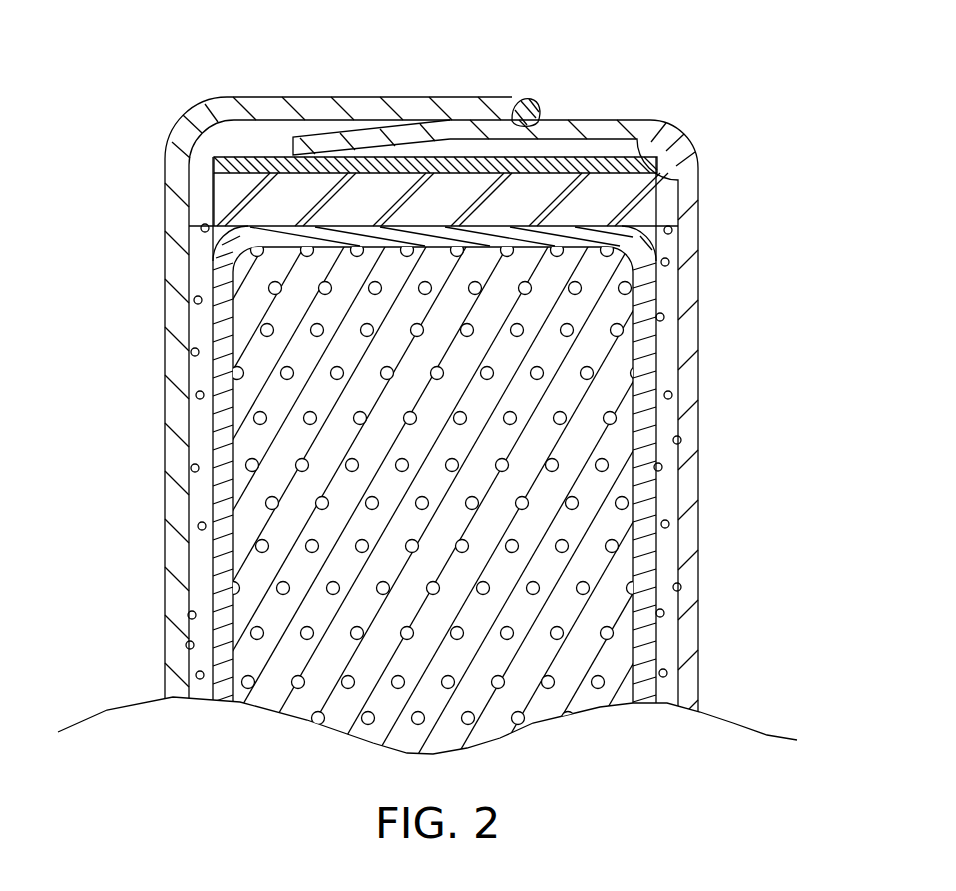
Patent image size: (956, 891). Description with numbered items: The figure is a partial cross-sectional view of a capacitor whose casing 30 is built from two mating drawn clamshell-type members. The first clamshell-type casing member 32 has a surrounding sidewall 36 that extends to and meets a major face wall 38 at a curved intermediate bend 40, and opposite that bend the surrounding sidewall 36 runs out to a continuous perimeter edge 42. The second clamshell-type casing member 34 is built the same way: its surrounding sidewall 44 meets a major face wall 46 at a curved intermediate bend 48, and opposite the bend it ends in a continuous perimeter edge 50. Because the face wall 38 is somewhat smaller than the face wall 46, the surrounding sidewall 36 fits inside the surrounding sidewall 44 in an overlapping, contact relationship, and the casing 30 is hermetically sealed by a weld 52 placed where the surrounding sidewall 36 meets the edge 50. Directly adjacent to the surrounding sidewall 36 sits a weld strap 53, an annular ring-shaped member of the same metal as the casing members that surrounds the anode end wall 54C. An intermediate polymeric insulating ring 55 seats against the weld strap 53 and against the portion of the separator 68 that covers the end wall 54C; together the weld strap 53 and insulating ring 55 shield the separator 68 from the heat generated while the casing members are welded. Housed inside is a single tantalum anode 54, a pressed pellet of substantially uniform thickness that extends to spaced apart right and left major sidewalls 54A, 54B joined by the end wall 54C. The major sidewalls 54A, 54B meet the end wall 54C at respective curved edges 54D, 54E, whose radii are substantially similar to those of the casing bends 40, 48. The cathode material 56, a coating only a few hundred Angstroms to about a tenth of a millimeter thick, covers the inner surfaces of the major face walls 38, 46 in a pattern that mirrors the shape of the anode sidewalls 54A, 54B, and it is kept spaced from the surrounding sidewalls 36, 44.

The casing 30 is at (767, 92).
The first clamshell-type casing member 32 is at (697, 202).
The second clamshell-type casing member 34 is at (240, 190).
The surrounding sidewall 36 is at (598, 126).
The major face wall 38 is at (697, 430).
The curved intermediate bend 40 is at (655, 132).
The perimeter edge 42 is at (293, 140).
The surrounding sidewall 44 is at (312, 105).
The major face wall 46 is at (167, 430).
The curved intermediate bend 48 is at (188, 130).
The perimeter edge 50 is at (522, 98).
The weld 52 is at (542, 120).
The weld strap 53 is at (454, 165).
The anode 54 is at (617, 578).
The right major sidewall 54A is at (654, 698).
The left major sidewall 54B is at (223, 662).
The end wall 54C is at (383, 245).
The curved edge 54D is at (657, 268).
The curved edge 54E is at (222, 292).
The insulating ring 55 is at (240, 229).
The cathode material 56 is at (197, 479).
The separator 68 is at (220, 545).